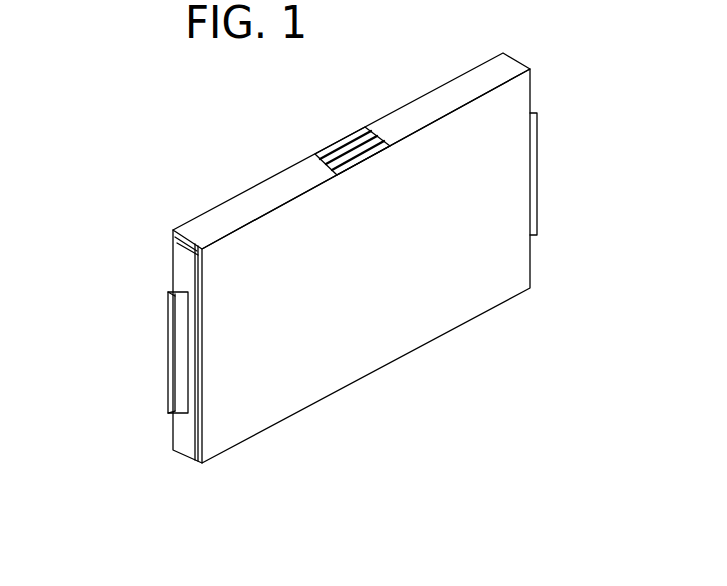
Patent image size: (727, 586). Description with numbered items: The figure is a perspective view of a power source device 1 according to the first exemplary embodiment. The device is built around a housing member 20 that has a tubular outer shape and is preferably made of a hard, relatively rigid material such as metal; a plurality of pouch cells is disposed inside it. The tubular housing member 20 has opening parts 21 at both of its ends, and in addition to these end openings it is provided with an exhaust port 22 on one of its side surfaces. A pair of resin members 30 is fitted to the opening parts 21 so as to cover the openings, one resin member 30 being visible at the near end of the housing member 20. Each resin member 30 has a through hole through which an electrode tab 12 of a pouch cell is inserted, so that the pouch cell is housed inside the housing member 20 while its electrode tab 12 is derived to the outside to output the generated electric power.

The power source device 1 is at (350, 258).
The electrode tab 12 is at (170, 350).
The housing member 20 is at (500, 279).
The opening part 21 is at (537, 65).
The exhaust port 22 is at (323, 138).
The resin member 30 is at (175, 258).